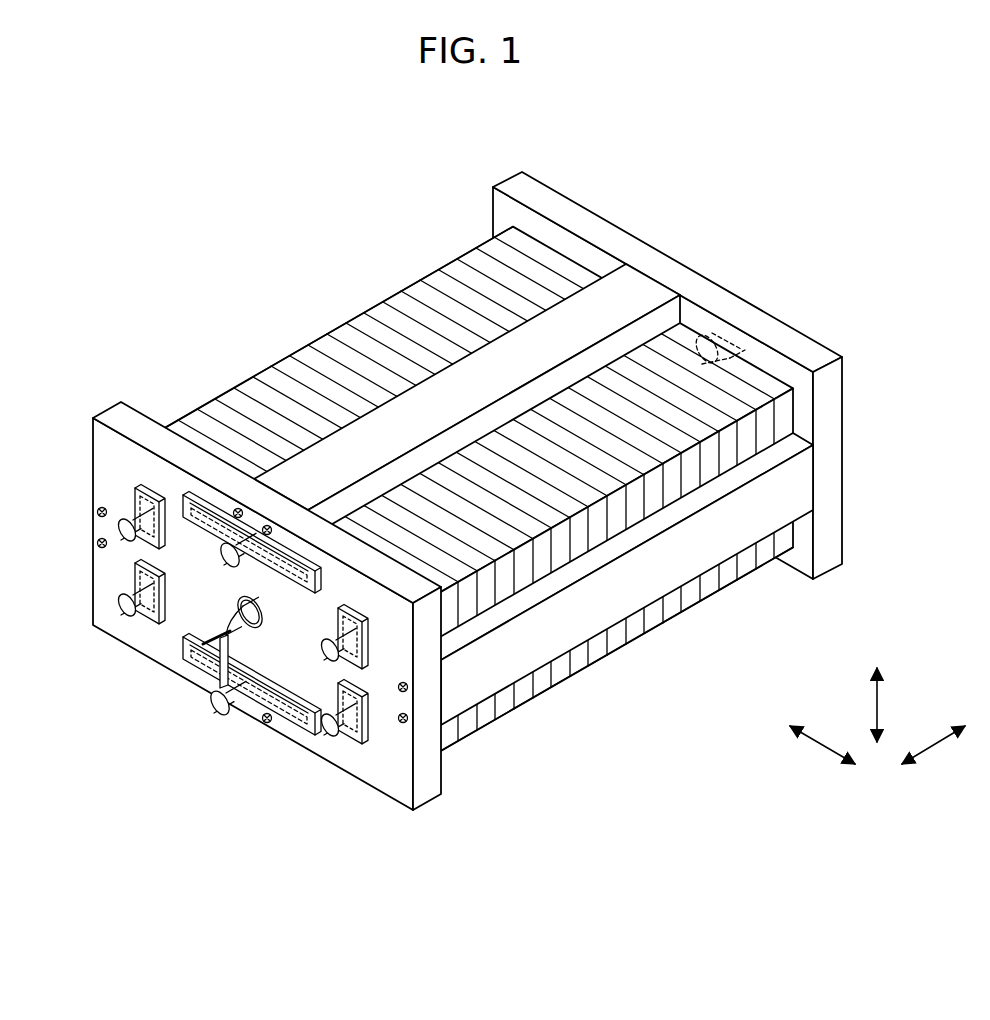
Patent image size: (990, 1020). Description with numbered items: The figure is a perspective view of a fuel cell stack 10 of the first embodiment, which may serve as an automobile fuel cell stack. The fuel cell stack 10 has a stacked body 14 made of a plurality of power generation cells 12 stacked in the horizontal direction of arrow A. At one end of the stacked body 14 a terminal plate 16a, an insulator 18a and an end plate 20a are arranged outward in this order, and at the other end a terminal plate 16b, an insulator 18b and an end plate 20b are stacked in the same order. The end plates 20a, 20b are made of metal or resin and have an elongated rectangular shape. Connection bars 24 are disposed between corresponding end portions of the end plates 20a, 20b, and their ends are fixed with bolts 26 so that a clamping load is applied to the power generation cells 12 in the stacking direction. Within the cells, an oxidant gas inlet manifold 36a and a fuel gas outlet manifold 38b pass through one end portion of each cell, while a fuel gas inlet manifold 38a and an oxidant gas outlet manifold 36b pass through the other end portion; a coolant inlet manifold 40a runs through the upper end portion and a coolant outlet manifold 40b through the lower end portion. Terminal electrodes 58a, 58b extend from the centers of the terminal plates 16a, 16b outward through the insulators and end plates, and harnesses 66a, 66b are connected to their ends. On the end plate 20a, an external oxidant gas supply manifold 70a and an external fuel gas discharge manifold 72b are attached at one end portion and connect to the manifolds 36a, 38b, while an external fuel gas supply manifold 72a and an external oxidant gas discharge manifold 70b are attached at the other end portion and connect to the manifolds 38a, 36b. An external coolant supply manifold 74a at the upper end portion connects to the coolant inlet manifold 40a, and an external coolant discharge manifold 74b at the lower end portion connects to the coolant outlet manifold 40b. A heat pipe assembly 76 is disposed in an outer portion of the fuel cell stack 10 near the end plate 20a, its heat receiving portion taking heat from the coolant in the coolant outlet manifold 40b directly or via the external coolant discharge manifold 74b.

The fuel cell stack 10 is at (361, 101).
The power generation cell 12 is at (375, 305).
The stacked body 14 is at (467, 473).
The terminal plate 16a is at (455, 615).
The terminal plate 16b is at (562, 270).
The insulator 18a is at (452, 740).
The insulator 18b is at (540, 255).
The end plate 20a is at (134, 408).
The end plate 20b is at (822, 348).
The connection bar 24 is at (645, 285).
The bolt 26 is at (99, 547).
The oxidant gas inlet manifold 36a is at (135, 496).
The oxidant gas outlet manifold 36b is at (346, 742).
The fuel gas inlet manifold 38a is at (338, 620).
The fuel gas outlet manifold 38b is at (135, 578).
The coolant inlet manifold 40a is at (278, 548).
The coolant outlet manifold 40b is at (300, 713).
The terminal electrode 58a is at (250, 632).
The terminal electrode 58b is at (709, 333).
The harness 66a is at (212, 640).
The harness 66b is at (746, 348).
The external oxidant gas supply manifold 70a is at (126, 531).
The external oxidant gas discharge manifold 70b is at (331, 730).
The external fuel gas supply manifold 72a is at (329, 654).
The external fuel gas discharge manifold 72b is at (128, 612).
The external coolant supply manifold 74a is at (228, 555).
The external coolant discharge manifold 74b is at (220, 710).
The heat pipe assembly 76 is at (218, 676).